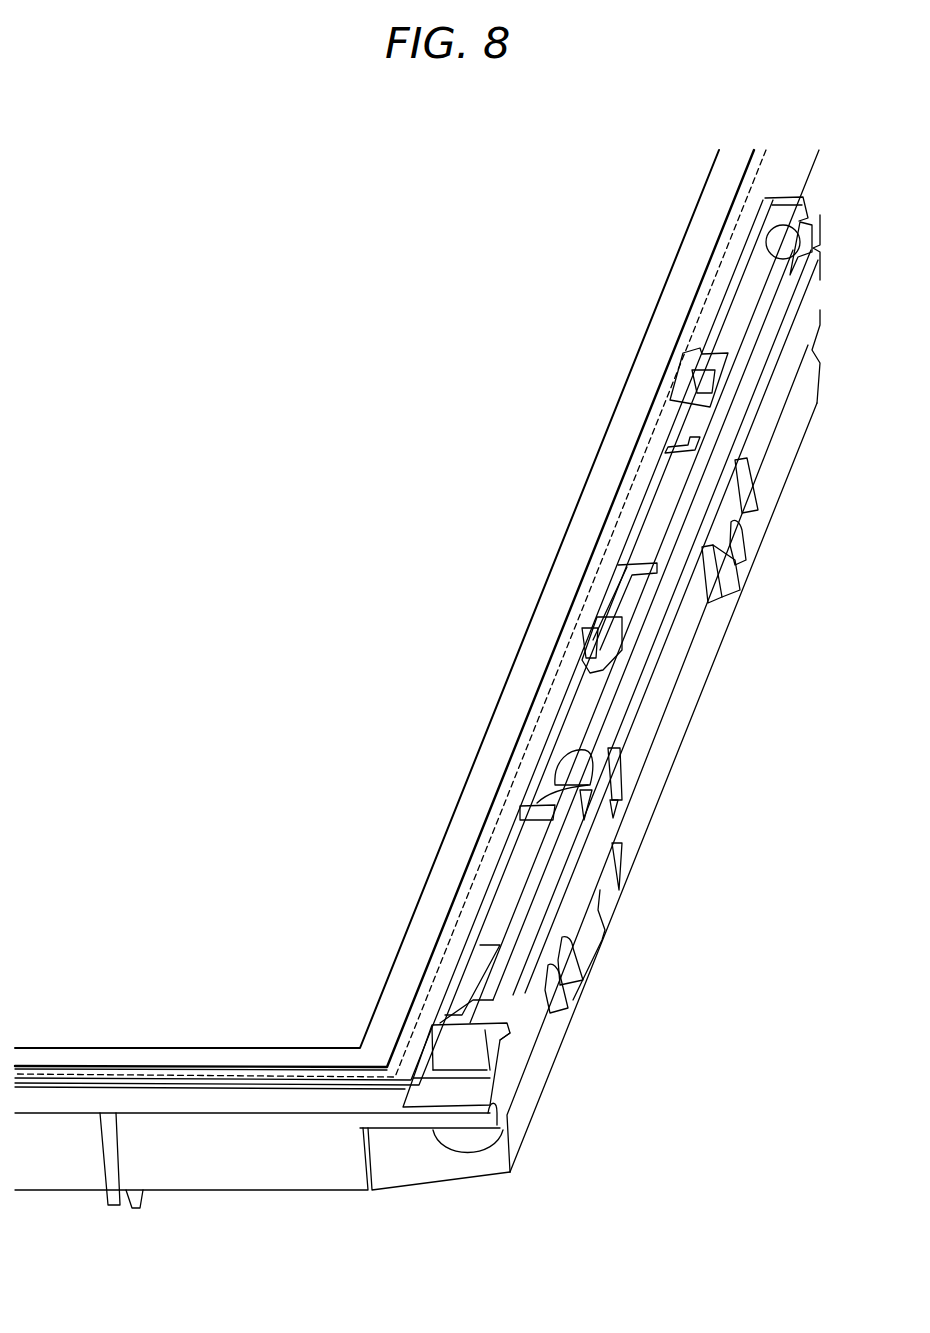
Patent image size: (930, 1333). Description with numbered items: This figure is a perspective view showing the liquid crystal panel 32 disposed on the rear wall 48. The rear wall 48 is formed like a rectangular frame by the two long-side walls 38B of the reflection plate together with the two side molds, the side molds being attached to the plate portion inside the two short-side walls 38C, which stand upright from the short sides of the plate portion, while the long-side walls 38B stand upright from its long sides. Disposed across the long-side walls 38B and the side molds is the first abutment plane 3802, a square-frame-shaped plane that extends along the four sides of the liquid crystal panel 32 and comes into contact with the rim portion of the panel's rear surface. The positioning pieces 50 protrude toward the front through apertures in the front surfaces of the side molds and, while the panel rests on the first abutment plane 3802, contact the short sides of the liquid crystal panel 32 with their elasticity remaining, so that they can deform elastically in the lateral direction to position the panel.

The liquid crystal panel 32 is at (176, 342).
The rear wall 48 is at (446, 835).
The positioning piece 50 is at (670, 363).
The first abutment plane 3802 is at (640, 485).
The short-side wall 38C is at (673, 718).
The long-side wall 38B is at (293, 1157).